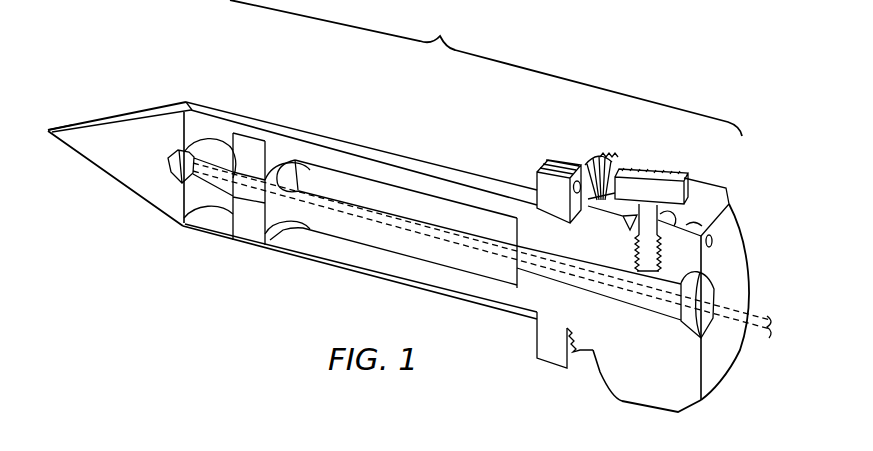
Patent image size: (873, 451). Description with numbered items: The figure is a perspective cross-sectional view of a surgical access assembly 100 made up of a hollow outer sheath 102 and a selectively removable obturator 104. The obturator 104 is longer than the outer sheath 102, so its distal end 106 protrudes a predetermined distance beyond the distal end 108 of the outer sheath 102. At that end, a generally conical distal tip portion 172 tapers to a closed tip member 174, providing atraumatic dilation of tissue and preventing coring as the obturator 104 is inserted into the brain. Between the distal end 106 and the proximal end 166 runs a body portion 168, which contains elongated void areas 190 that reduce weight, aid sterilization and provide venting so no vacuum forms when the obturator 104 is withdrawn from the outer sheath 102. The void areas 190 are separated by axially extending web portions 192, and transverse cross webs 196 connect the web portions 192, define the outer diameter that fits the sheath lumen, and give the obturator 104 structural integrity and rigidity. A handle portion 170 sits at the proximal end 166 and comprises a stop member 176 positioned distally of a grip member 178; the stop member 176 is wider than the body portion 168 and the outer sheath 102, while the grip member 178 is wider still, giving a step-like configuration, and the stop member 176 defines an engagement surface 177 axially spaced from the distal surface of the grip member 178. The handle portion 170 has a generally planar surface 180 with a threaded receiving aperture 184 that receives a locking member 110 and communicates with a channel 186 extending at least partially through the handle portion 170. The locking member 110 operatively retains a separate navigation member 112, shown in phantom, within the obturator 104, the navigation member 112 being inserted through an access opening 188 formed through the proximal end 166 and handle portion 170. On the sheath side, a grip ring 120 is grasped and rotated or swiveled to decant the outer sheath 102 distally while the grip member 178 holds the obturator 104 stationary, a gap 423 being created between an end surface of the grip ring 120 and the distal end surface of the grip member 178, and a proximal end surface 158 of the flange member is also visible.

The surgical access assembly 100 is at (486, 68).
The outer sheath 102 is at (330, 147).
The obturator 104 is at (535, 300).
The distal end 106 is at (76, 165).
The distal end 108 is at (174, 98).
The locking member 110 is at (640, 156).
The navigation member 112 is at (287, 190).
The grip ring 120 is at (543, 156).
The proximal end surface 158 is at (592, 200).
The proximal end 166 is at (742, 352).
The body portion 168 is at (334, 253).
The handle portion 170 is at (730, 275).
The distal tip portion 172 is at (95, 143).
The tip member 174 is at (47, 130).
The stop member 176 is at (590, 164).
The engagement surface 177 is at (567, 333).
The grip member 178 is at (700, 193).
The planar surface 180 is at (668, 212).
The receiving aperture 184 is at (703, 222).
The channel 186 is at (658, 302).
The access opening 188 is at (723, 293).
The void areas 190 is at (413, 207).
The web portions 192 is at (377, 172).
The cross webs 196 is at (251, 150).
The gap 423 is at (611, 156).